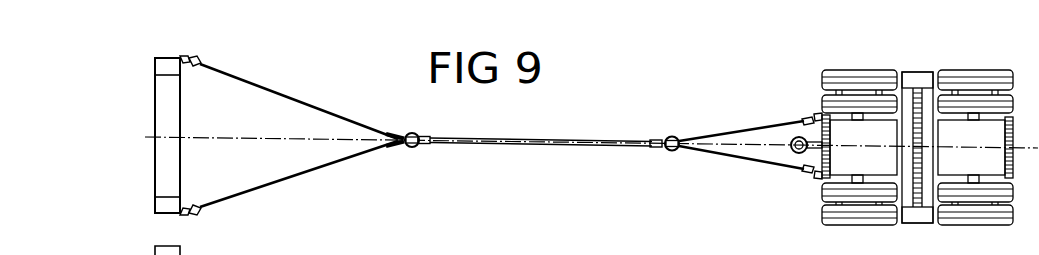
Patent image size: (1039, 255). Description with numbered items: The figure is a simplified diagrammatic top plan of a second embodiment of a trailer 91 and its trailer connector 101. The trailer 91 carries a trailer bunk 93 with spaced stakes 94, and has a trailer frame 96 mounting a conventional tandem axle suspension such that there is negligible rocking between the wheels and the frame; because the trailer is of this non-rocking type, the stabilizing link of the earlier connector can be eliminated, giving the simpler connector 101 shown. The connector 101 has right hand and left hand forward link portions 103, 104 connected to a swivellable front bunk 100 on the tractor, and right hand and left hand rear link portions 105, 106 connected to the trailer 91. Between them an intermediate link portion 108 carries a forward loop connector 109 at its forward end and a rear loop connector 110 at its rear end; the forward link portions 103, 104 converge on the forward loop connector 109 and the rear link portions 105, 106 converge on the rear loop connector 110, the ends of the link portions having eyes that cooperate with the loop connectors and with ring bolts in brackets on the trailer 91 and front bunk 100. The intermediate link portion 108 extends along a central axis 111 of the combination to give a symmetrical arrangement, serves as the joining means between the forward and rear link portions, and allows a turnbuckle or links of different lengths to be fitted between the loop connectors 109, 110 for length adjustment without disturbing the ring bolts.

The trailer 91 is at (917, 137).
The trailer bunk 93 is at (927, 112).
The stakes 94 is at (920, 82).
The trailer frame 96 is at (856, 157).
The front bunk 100 is at (170, 108).
The trailer connector 101 is at (514, 114).
The right hand forward link portion 103 is at (290, 95).
The left hand forward link portion 104 is at (297, 178).
The right hand rear link portion 105 is at (760, 127).
The left hand rear link portion 106 is at (730, 162).
The intermediate link portion 108 is at (495, 148).
The forward loop connector 109 is at (415, 153).
The rear loop connector 110 is at (658, 153).
The central axis 111 is at (227, 140).